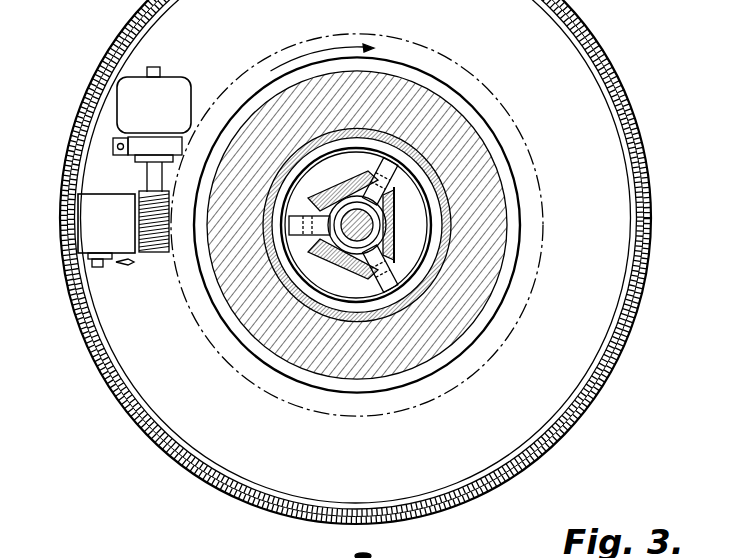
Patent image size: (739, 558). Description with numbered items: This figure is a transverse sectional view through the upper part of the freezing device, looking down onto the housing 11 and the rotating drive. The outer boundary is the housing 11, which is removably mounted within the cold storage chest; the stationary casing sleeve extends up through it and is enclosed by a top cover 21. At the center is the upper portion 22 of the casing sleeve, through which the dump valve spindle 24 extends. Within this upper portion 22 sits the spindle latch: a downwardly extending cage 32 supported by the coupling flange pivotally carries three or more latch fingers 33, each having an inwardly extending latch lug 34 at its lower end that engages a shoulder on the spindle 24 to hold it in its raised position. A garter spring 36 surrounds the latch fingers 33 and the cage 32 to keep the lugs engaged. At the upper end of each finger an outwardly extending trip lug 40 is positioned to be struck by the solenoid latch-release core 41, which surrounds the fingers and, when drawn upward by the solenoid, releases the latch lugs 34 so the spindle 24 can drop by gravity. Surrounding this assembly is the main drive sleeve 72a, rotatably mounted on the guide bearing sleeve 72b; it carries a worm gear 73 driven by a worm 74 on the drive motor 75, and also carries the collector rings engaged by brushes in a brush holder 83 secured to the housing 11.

The housing 11 is at (639, 237).
The top cover 21 is at (651, 205).
The upper portion of the casing sleeve 22 is at (295, 269).
The dump valve spindle 24 is at (352, 214).
The cage 32 is at (389, 211).
The latch fingers 33 is at (376, 168).
The latch lug 34 is at (392, 553).
The garter spring 36 is at (389, 231).
The trip lug 40 is at (376, 282).
The solenoid latch-release core 41 is at (346, 273).
The main drive sleeve 72a is at (491, 209).
The guide bearing sleeve 72b is at (437, 264).
The worm gear 73 is at (197, 327).
The worm 74 is at (152, 254).
The drive motor 75 is at (170, 83).
The brush holder 83 is at (86, 224).